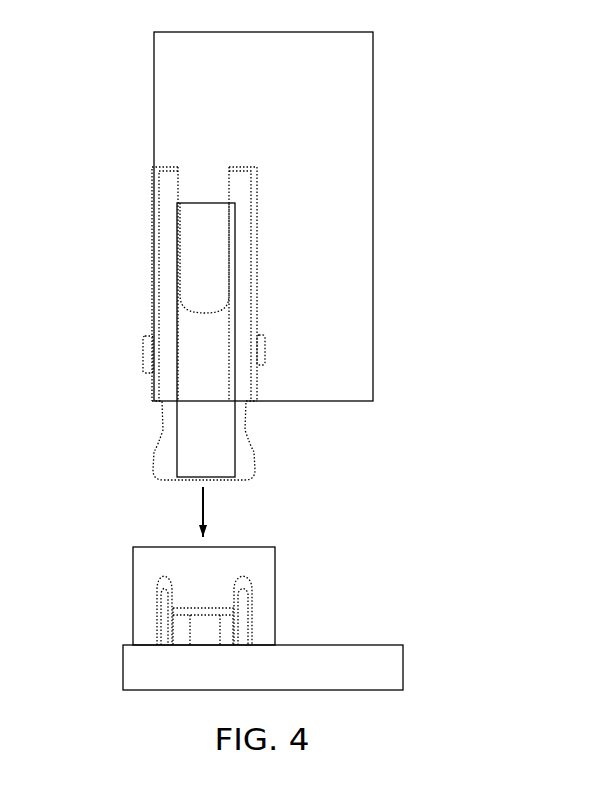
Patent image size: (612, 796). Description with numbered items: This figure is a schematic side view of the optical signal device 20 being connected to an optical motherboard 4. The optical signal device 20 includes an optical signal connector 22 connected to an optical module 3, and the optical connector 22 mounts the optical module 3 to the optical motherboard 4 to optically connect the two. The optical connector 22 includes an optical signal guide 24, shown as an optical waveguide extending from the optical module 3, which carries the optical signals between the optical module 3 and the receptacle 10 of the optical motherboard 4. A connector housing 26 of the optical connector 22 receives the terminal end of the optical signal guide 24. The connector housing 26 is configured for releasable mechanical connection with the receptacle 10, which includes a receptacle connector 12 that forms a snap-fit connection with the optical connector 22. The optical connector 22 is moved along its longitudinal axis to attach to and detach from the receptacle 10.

The optical module 3 is at (172, 62).
The optical signal device 20 is at (277, 323).
The optical signal guide 24 is at (202, 239).
The connector housing 26 is at (169, 313).
The optical signal connector 22 is at (158, 433).
The receptacle 10 is at (160, 563).
The receptacle connector 12 is at (150, 603).
The optical motherboard 4 is at (227, 585).